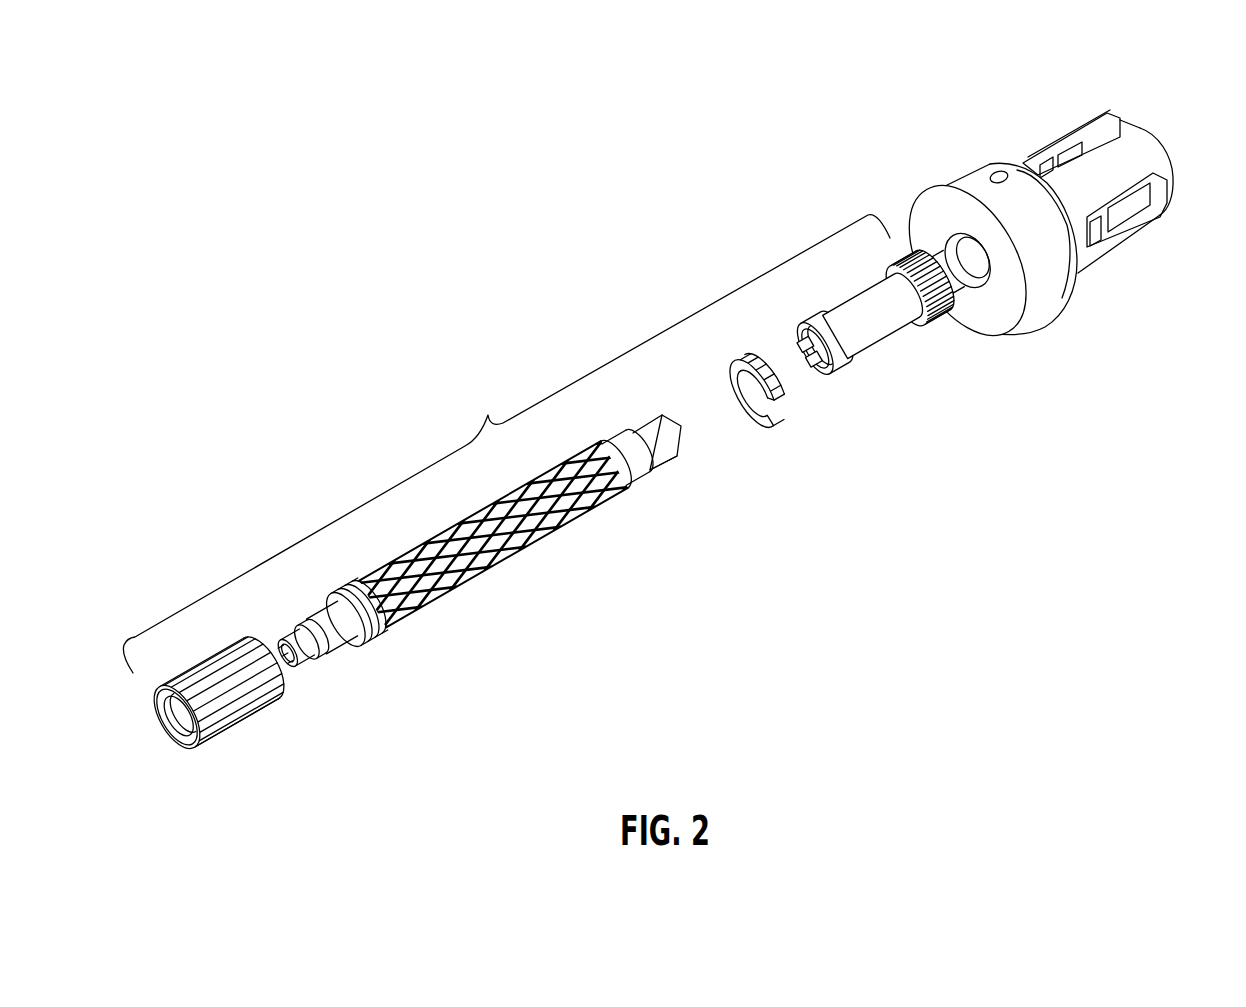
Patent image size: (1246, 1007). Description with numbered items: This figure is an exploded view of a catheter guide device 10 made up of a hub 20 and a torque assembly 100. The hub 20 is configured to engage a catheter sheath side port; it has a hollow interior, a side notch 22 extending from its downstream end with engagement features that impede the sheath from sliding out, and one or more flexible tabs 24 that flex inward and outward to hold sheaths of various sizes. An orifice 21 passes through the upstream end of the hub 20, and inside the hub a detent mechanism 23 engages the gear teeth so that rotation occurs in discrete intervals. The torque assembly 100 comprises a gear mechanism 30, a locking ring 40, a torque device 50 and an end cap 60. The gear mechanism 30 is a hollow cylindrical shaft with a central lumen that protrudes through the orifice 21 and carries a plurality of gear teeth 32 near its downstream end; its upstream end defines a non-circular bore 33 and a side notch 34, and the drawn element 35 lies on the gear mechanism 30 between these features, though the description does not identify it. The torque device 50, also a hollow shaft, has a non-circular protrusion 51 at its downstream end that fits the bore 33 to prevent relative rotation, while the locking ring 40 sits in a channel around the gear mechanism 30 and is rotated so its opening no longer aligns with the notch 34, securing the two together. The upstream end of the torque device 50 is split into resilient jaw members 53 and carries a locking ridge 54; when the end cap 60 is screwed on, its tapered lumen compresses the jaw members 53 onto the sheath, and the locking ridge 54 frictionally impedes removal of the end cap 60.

The catheter guide device 10 is at (1137, 86).
The hub 20 is at (1036, 208).
The orifice 21 is at (943, 238).
The side notch 22 is at (1100, 127).
The detent mechanism 23 is at (994, 173).
The flexible tabs 24 is at (1148, 203).
The gear mechanism 30 is at (888, 347).
The gear teeth 32 is at (933, 320).
The non-circular bore 33 is at (825, 377).
The notch 34 is at (805, 373).
The insert body 35 is at (852, 357).
The locking ring 40 is at (763, 420).
The torque device 50 is at (492, 562).
The non-circular protrusion 51 is at (663, 457).
The jaw members 53 is at (298, 663).
The locking ridge 54 is at (323, 650).
The end cap 60 is at (220, 720).
The torque assembly 100 is at (506, 444).